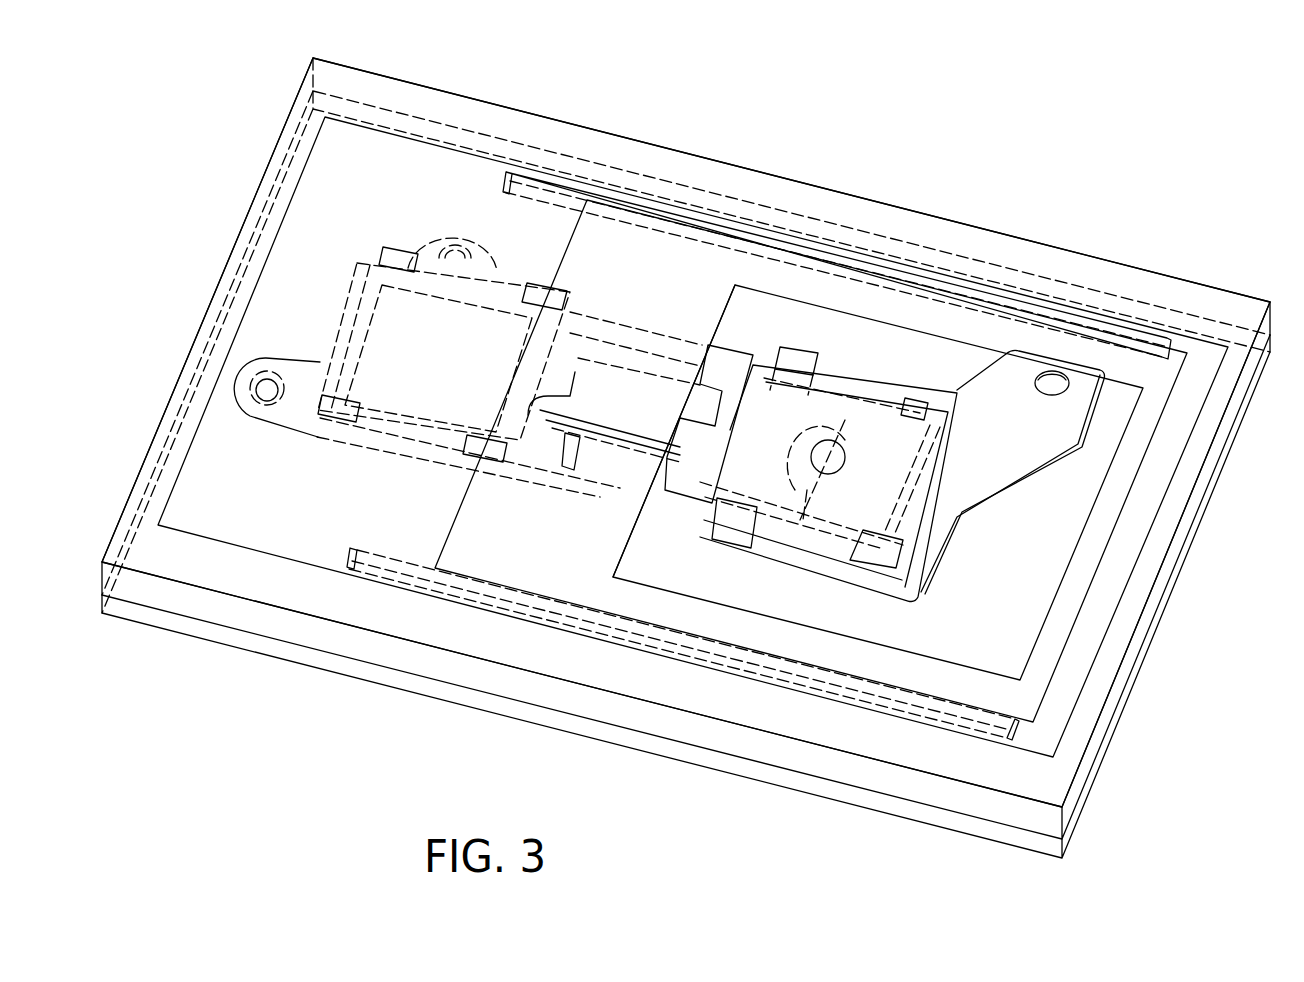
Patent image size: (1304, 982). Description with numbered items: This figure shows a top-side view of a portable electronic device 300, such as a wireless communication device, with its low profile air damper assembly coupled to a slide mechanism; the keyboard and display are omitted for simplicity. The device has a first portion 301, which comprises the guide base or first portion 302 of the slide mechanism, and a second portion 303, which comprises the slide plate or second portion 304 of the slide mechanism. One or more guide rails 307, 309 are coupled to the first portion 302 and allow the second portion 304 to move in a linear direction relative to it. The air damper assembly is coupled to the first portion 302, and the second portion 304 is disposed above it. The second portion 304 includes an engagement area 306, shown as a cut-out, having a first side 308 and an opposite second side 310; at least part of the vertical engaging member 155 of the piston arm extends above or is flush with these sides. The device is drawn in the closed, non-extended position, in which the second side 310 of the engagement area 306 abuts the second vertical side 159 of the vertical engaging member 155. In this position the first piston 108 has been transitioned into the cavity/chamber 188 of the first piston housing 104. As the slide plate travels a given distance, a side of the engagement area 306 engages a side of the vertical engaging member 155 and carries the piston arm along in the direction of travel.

The portable electronic device 300 is at (170, 320).
The first portion of the portable electronic device 301 is at (268, 650).
The first portion of the slide mechanism 302 is at (272, 526).
The second portion of the portable electronic device 303 is at (455, 668).
The second portion of the slide mechanism 304 is at (610, 237).
The engagement area 306 is at (937, 618).
The guide rail 307 is at (760, 662).
The first side of the engagement area 308 is at (1050, 604).
The guide rail 309 is at (1088, 316).
The second side of the engagement area 310 is at (634, 542).
The first piston housing 104 is at (935, 422).
The first piston 108 is at (885, 432).
The vertical engaging member 155 is at (732, 352).
The second vertical side of the vertical engaging member 159 is at (700, 357).
The cavity/chamber 188 is at (790, 412).